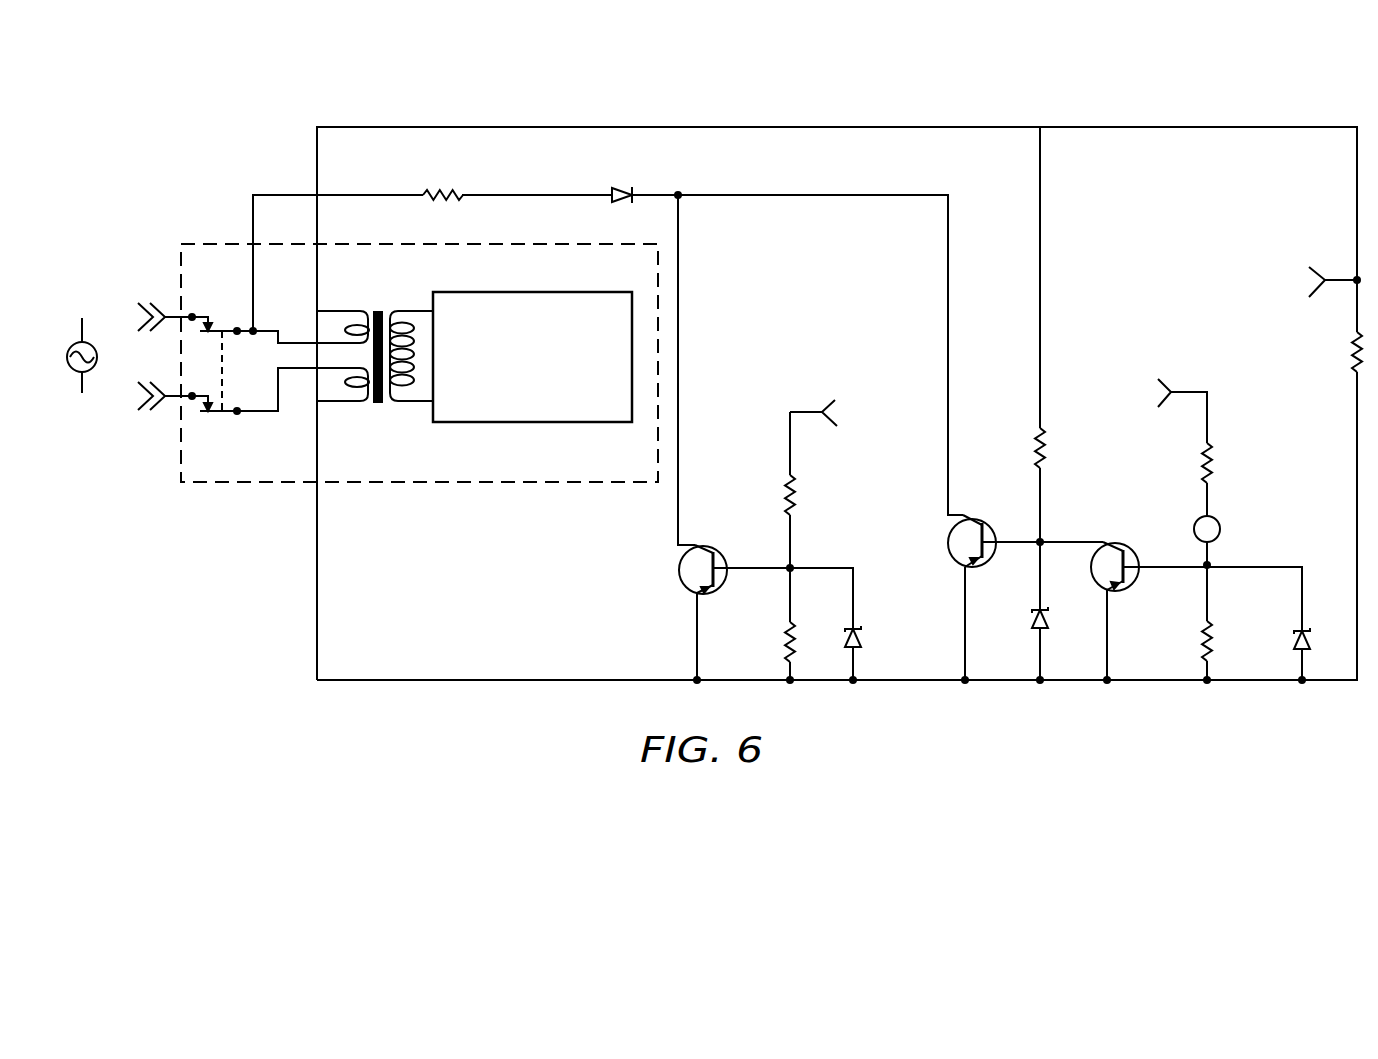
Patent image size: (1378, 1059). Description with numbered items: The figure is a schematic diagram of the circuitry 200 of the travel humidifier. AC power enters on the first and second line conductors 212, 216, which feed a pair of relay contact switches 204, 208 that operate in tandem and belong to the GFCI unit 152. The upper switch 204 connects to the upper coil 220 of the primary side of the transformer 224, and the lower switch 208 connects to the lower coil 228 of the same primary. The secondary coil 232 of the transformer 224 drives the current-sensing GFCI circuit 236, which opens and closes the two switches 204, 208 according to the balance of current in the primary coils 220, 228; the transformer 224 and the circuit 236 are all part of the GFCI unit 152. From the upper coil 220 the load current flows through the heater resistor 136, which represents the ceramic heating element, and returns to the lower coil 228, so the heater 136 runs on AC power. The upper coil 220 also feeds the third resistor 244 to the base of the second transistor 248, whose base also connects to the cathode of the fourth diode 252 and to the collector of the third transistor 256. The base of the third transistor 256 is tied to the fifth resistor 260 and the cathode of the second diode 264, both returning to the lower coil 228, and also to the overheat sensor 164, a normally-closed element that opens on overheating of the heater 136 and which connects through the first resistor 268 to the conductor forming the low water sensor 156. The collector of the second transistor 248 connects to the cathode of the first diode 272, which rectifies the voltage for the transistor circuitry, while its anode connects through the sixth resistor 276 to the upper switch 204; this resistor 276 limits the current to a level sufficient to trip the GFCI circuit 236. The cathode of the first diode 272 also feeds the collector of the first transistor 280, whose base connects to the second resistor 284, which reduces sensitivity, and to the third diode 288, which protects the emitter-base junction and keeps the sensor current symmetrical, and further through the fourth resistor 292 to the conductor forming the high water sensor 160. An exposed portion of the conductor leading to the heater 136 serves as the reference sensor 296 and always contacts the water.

The circuitry 200 is at (300, 106).
The conductor L1 212 is at (146, 303).
The conductor L2 216 is at (145, 414).
The upper switch 204 is at (225, 330).
The lower switch 208 is at (223, 412).
The GFCI unit 152 is at (553, 483).
The upper coil 220 is at (348, 310).
The lower coil 228 is at (345, 403).
The transformer T1 224 is at (404, 411).
The secondary coil 232 is at (415, 310).
The GFCI circuit 236 is at (553, 335).
The resistor R6 276 is at (457, 188).
The diode D1 272 is at (633, 192).
The high water sensor 160 is at (820, 412).
The resistor R4 292 is at (787, 483).
The transistor Q1 280 is at (678, 577).
The resistor R2 284 is at (792, 662).
The diode D3 288 is at (857, 627).
The transistor Q2 248 is at (950, 552).
The resistor R3 244 is at (1035, 430).
The diode D4 252 is at (1036, 622).
The transistor Q3 256 is at (1093, 583).
The low water sensor 156 is at (1186, 392).
The resistor R1 268 is at (1214, 456).
The overheat sensor 164 is at (1217, 520).
The resistor R5 260 is at (1201, 625).
The diode D2 264 is at (1299, 629).
The reference sensor 296 is at (1334, 276).
The resistor R7 (heating element) 136 is at (1353, 336).